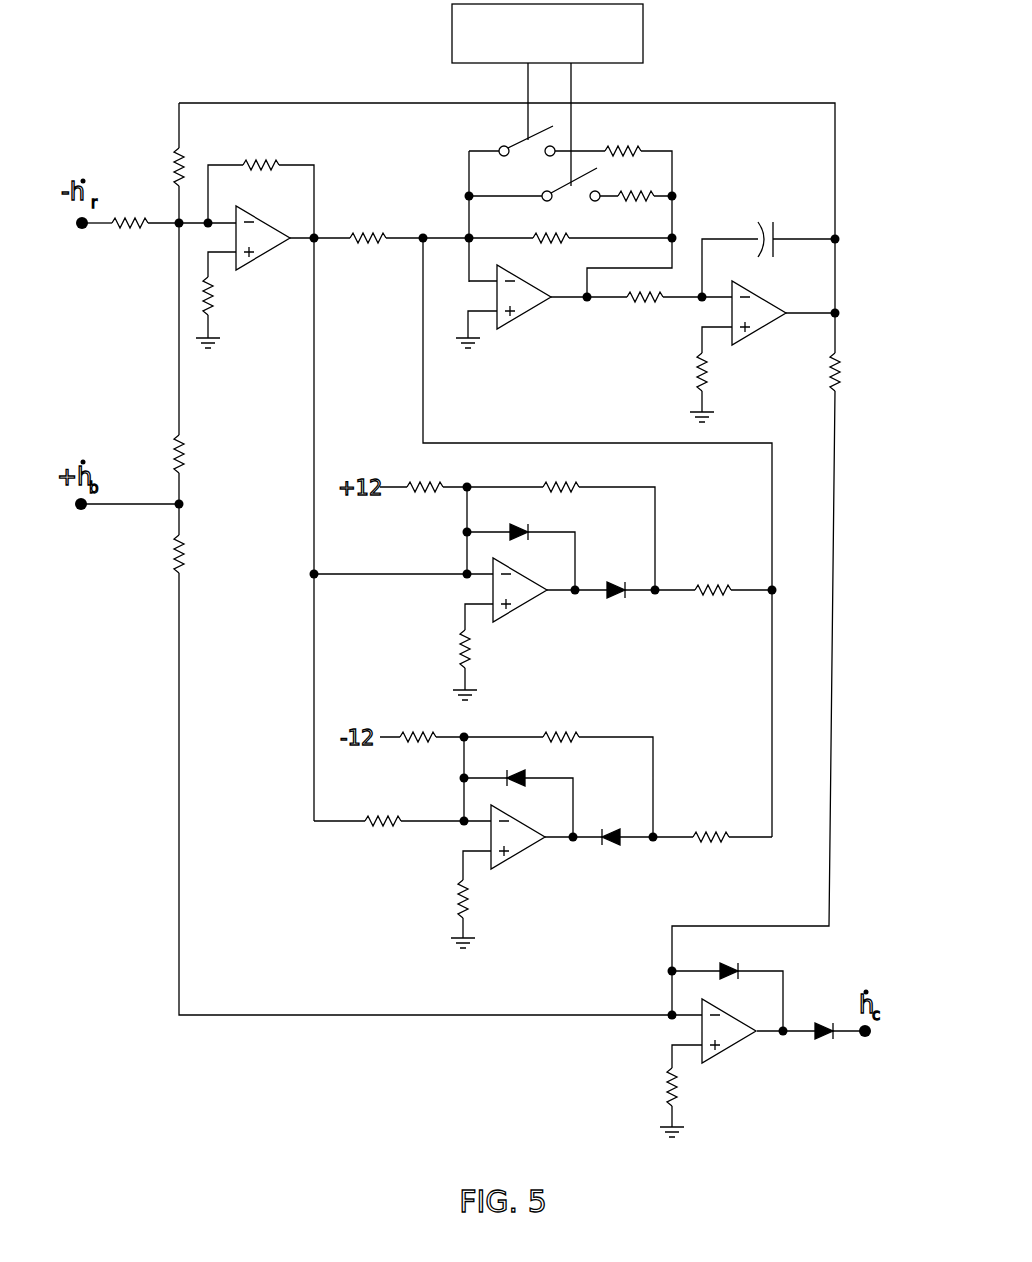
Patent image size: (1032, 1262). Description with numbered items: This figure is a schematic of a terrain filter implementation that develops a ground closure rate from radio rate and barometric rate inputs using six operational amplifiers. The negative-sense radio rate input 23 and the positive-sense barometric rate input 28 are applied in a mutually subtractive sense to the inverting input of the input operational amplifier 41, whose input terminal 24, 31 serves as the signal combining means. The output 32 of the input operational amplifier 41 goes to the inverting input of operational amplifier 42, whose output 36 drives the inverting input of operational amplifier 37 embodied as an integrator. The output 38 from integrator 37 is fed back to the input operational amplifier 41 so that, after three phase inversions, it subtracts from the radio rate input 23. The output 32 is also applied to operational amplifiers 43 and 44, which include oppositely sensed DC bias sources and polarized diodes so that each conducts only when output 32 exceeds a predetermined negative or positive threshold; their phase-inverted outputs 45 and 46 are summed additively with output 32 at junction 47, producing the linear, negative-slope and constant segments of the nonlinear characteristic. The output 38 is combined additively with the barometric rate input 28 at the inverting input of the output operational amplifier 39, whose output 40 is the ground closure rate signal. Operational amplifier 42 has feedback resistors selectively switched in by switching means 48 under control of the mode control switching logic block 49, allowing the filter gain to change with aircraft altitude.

The radio rate input 23 is at (100, 222).
The signal combining means 24 is at (170, 227).
The signal combining means 31 is at (208, 223).
The barometric rate input 28 is at (128, 506).
The output of input operational amplifier 32 is at (300, 244).
The output of operational amplifier 42 36 is at (612, 299).
The integrator 37 is at (755, 332).
The output of integrator 38 is at (835, 292).
The output operational amplifier 39 is at (735, 1048).
The ground closure rate output 40 is at (845, 1033).
The input operational amplifier 41 is at (258, 214).
The operational amplifier 42 is at (518, 277).
The operational amplifier 43 is at (525, 606).
The operational amplifier 44 is at (522, 852).
The output of operational amplifier 43 45 is at (748, 592).
The output of operational amplifier 44 46 is at (738, 840).
The junction 47 is at (423, 233).
The switching means 48 is at (588, 160).
The mode control switching logic block 49 is at (643, 30).